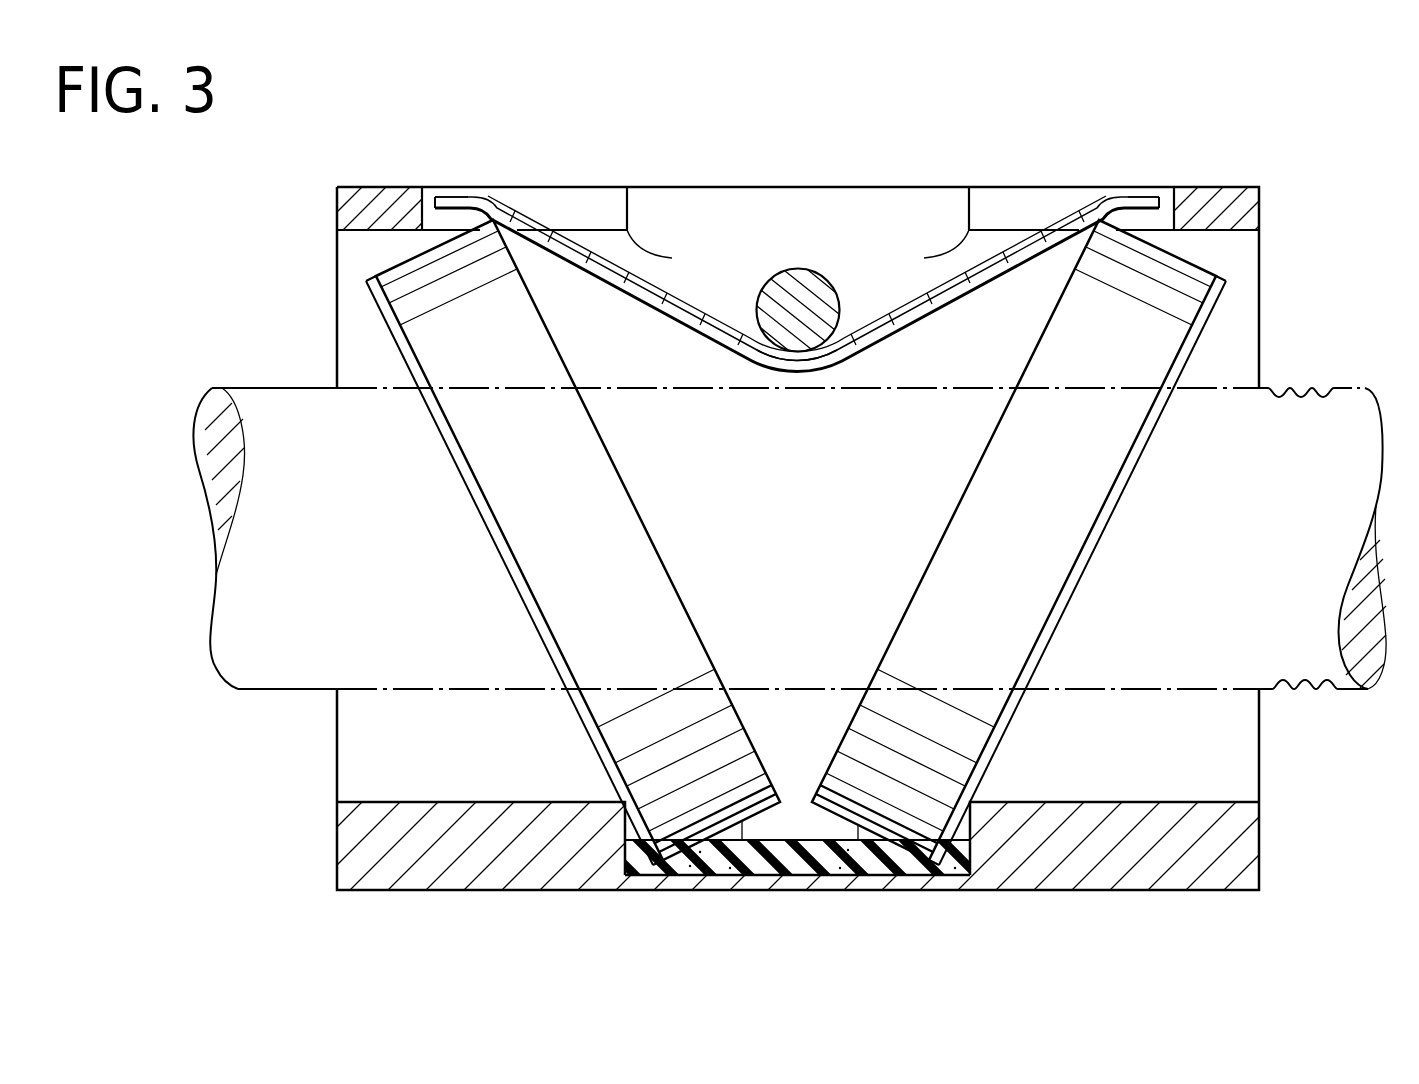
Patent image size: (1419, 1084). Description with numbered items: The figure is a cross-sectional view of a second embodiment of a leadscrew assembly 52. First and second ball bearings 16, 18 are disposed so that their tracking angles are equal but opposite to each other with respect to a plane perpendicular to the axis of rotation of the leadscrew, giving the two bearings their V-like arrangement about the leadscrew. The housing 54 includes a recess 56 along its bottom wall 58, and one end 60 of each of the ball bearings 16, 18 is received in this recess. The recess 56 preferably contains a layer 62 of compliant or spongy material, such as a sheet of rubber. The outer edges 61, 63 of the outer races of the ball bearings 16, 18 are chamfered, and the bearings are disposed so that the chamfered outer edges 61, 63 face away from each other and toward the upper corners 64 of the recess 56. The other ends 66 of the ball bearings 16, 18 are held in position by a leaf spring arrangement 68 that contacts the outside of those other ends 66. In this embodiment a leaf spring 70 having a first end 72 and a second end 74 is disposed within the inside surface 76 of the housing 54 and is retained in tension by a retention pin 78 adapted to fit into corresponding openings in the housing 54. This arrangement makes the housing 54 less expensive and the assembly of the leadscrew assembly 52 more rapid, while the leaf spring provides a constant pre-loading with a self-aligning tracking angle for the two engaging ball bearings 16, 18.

The first ball bearing 16 is at (796, 542).
The second ball bearing 18 is at (1025, 542).
The leadscrew assembly 52 is at (1331, 247).
The housing 54 is at (1132, 872).
The recess 56 is at (807, 881).
The bottom wall 58 is at (489, 802).
The one end of the ball bearings 60 is at (738, 858).
The chamfered outer edge of the first ball bearing outer race 61 is at (393, 312).
The layer of compliant material 62 is at (852, 856).
The chamfered outer edge of the second ball bearing outer race 63 is at (1212, 312).
The upper corners of the recess 64 is at (622, 800).
The other ends of the ball bearings 66 is at (406, 262).
The leaf spring arrangement 68 is at (799, 253).
The leaf spring 70 is at (886, 316).
The first end of the leaf spring 72 is at (457, 193).
The second end of the leaf spring 74 is at (1140, 196).
The inside surface of the housing 76 is at (436, 197).
The retention pin 78 is at (786, 280).